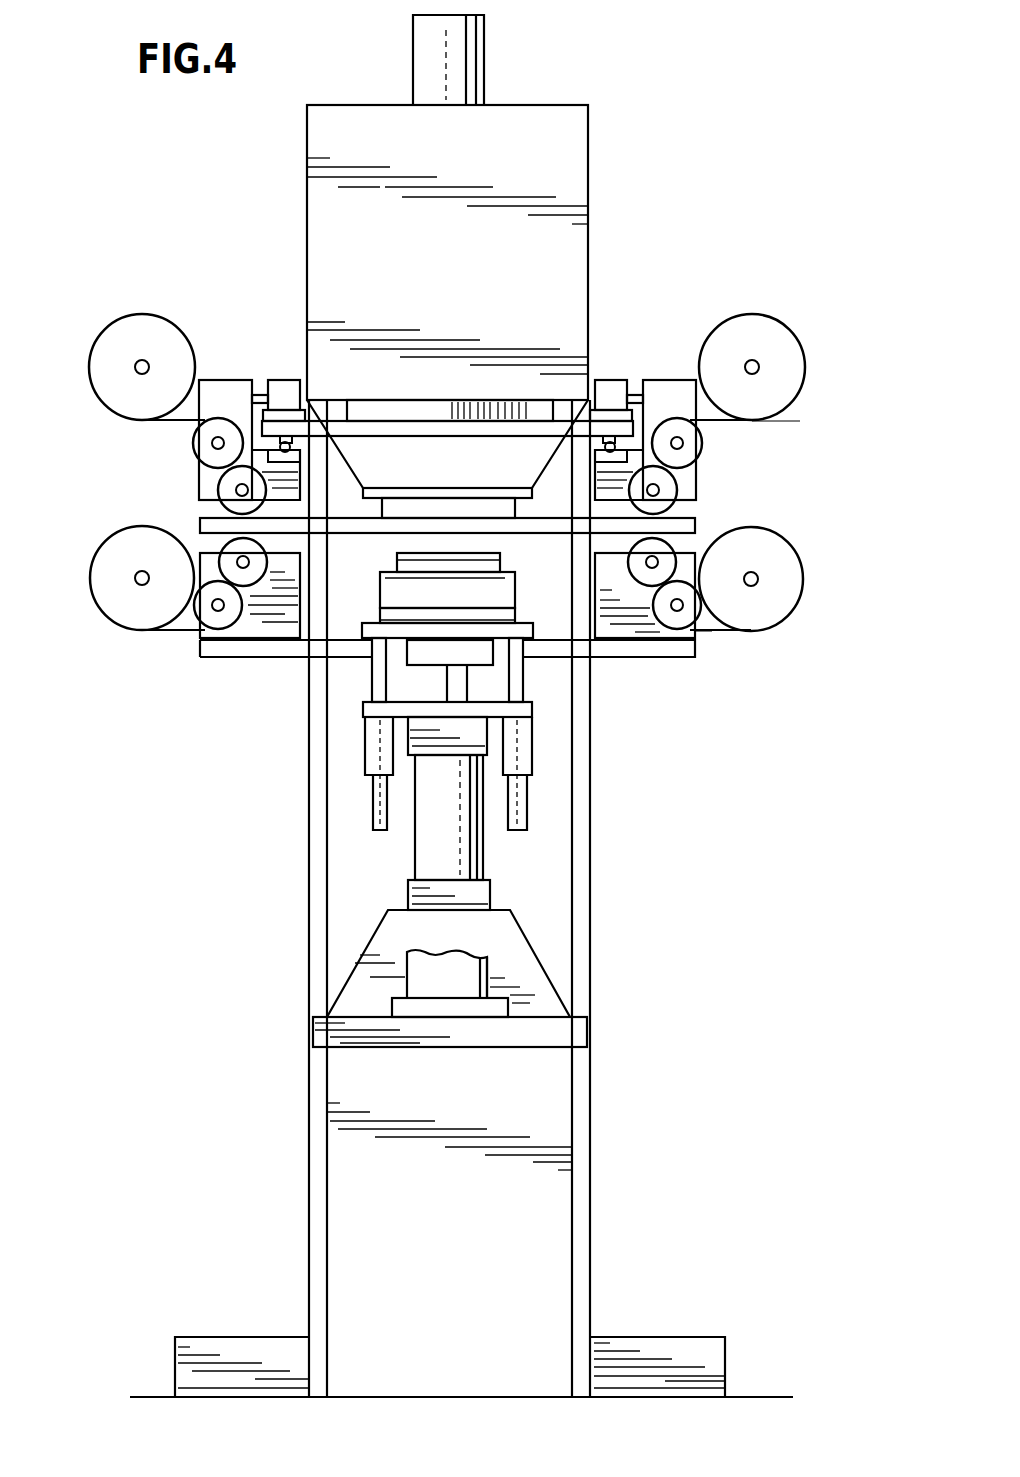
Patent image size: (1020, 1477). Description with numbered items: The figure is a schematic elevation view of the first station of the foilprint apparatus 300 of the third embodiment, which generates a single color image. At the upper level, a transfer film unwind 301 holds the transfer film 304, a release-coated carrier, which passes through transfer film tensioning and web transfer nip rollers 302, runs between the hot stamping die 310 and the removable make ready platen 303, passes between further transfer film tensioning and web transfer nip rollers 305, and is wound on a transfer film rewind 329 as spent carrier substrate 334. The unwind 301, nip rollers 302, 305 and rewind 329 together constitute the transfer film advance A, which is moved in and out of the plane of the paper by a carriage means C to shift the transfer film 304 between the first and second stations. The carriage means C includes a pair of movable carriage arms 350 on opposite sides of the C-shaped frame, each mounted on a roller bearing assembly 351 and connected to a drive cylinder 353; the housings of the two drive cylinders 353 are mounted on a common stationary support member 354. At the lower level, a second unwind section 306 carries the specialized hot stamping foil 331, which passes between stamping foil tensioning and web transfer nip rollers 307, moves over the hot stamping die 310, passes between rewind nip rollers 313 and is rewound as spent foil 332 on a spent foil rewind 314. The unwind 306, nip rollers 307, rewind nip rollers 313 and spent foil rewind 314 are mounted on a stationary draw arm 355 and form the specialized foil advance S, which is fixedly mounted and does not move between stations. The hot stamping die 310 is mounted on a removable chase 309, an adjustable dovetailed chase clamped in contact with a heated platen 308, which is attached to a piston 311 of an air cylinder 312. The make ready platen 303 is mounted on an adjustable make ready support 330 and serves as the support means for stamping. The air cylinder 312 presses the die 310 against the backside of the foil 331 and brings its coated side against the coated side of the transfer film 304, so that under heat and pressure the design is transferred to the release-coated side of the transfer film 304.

The apparatus 300 is at (232, 180).
The transfer film unwind 301 is at (105, 357).
The transfer film tensioning and web transfer nip rollers 302 is at (207, 445).
The removable make ready platen 303 is at (473, 505).
The transfer film 304 is at (185, 421).
The transfer film tensioning and web transfer nip rollers 305 is at (683, 456).
The second unwind section 306 is at (107, 590).
The stamping foil tensioning and web transfer nip rollers 307 is at (197, 622).
The heated platen 308 is at (515, 586).
The removable chase 309 is at (485, 568).
The hot stamping die 310 is at (400, 558).
The piston 311 is at (440, 681).
The air cylinder 312 is at (445, 835).
The rewind nip rollers 313 is at (665, 547).
The spent foil rewind 314 is at (785, 595).
The transfer film rewind 329 is at (783, 365).
The make ready support 330 is at (410, 465).
The specialized hot stamping foil 331 is at (178, 631).
The spent foil 332 is at (718, 633).
The spent carrier substrate 334 is at (713, 425).
The carriage arms 350 is at (218, 395).
The roller bearing assembly 351 is at (298, 462).
The drive cylinder 353 is at (283, 390).
The stationary support member 354 is at (430, 430).
The stationary draw arm 355 is at (227, 652).
The transfer film advance A is at (795, 411).
The carriage means C is at (651, 372).
The specialized foil advance S is at (708, 655).